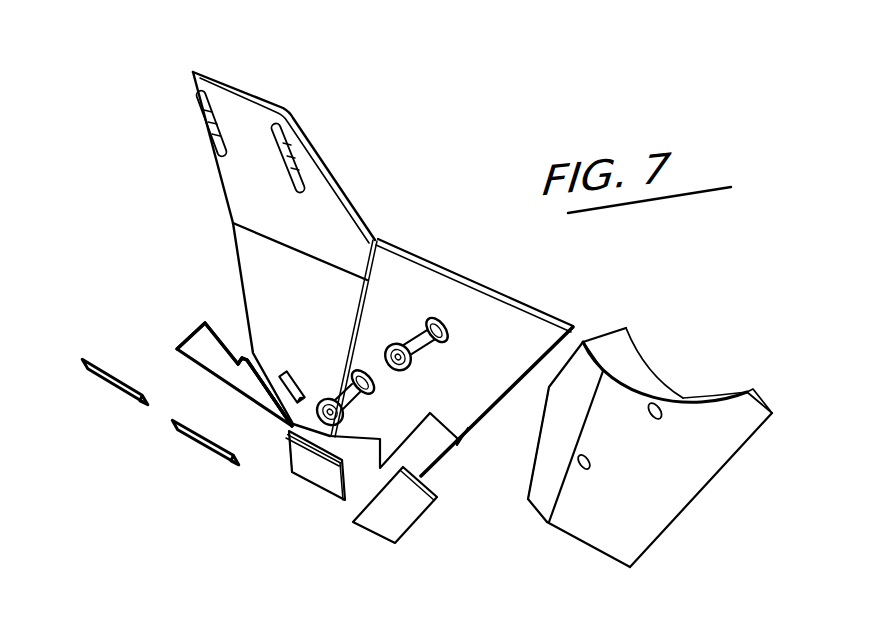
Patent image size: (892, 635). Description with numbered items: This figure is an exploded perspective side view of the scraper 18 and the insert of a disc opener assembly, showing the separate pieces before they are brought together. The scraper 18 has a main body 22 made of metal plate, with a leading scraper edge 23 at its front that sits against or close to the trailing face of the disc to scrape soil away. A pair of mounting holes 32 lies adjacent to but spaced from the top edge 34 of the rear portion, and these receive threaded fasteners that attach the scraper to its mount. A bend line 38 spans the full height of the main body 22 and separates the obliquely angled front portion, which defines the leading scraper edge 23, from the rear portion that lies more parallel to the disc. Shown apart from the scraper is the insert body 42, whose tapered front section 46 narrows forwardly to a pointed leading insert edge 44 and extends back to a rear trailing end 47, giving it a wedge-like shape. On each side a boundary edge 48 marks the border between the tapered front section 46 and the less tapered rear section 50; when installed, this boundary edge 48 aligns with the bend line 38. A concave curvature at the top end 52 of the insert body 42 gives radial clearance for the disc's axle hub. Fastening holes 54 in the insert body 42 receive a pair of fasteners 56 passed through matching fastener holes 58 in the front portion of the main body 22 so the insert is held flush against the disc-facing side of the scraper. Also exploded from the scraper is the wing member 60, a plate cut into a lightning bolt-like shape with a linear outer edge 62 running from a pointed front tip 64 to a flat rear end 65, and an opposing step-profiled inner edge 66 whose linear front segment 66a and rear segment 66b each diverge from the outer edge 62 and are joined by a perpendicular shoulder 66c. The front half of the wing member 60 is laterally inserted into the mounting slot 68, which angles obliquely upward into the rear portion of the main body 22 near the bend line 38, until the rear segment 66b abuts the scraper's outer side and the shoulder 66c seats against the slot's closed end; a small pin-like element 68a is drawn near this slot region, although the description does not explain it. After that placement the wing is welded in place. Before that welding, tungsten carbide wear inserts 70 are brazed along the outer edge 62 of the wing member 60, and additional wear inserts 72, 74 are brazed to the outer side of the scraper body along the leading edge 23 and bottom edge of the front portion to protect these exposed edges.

The scraper 18 is at (388, 274).
The main body 22 is at (490, 357).
The leading scraper edge 23 is at (562, 345).
The mounting holes 32 is at (282, 152).
The top edge 34 is at (262, 254).
The bend line 38 is at (352, 327).
The insert body 42 is at (623, 466).
The leading insert edge 44 is at (712, 483).
The front section 46 is at (613, 530).
The rear trailing end 47 is at (530, 477).
The boundary edge 48 is at (553, 498).
The rear section 50 is at (562, 423).
The top end 52 is at (653, 380).
The fastening holes 54 is at (586, 506).
The fasteners 56 is at (320, 393).
The fastener holes 58 is at (440, 340).
The wing member 60 is at (207, 318).
The linear outer edge 62 is at (225, 362).
The front tip 64 is at (291, 427).
The flat rear end 65 is at (193, 330).
The step-profiled inner edge 66 is at (225, 368).
The front segment 66a is at (290, 425).
The rear segment 66b is at (213, 325).
The shoulder 66c is at (240, 352).
The mounting slot 68 is at (301, 492).
The pin 68a is at (293, 363).
The wear inserts 70 is at (117, 385).
The wear insert 72 is at (403, 515).
The wear insert 74 is at (328, 480).